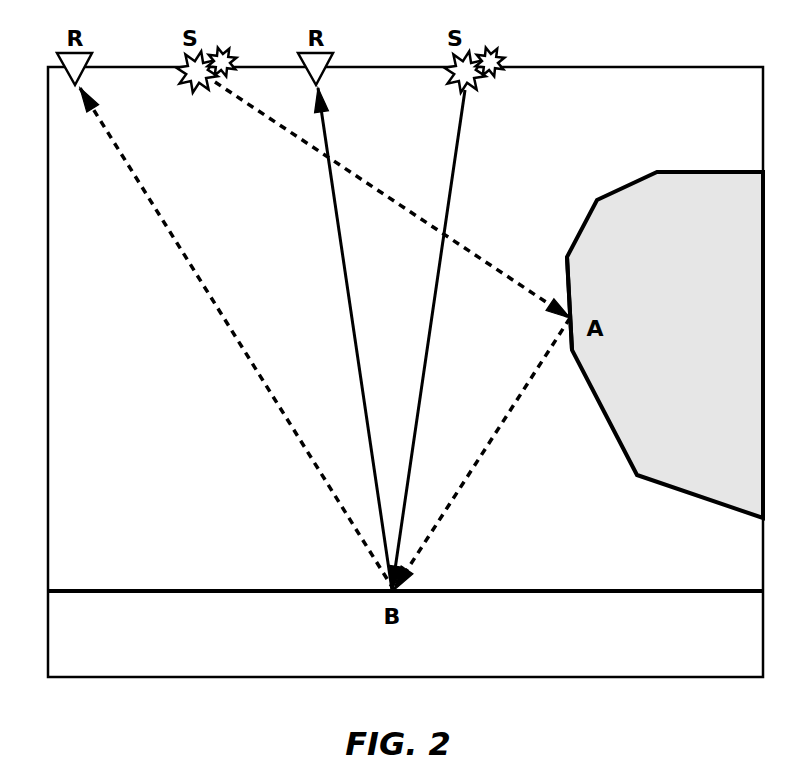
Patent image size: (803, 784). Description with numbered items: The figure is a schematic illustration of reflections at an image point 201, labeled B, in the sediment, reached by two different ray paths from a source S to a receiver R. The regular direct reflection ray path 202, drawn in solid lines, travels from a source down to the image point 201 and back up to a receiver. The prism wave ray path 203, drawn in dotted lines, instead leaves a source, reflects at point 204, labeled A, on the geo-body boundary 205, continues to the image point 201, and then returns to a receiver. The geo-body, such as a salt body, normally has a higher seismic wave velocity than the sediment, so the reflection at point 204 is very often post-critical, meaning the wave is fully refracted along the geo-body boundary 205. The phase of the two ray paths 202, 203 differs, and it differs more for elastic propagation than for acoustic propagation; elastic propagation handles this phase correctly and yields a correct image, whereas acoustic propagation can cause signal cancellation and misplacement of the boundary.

The image point 201 is at (396, 593).
The regular direct reflection ray path 202 is at (350, 308).
The prism wave ray path 203 is at (486, 263).
The reflection point on geo-body boundary 204 is at (575, 320).
The geo-body boundary 205 is at (637, 477).